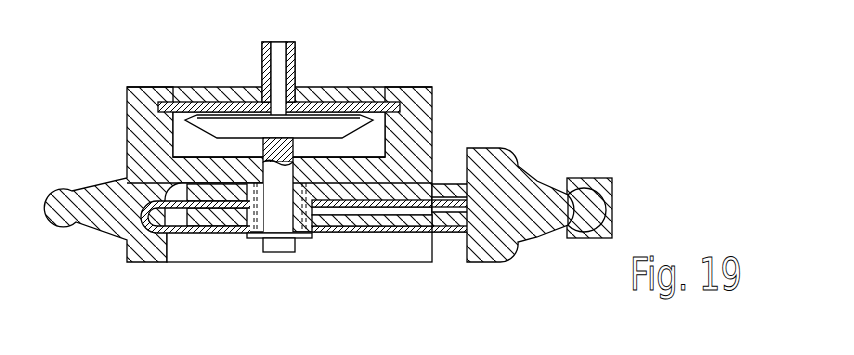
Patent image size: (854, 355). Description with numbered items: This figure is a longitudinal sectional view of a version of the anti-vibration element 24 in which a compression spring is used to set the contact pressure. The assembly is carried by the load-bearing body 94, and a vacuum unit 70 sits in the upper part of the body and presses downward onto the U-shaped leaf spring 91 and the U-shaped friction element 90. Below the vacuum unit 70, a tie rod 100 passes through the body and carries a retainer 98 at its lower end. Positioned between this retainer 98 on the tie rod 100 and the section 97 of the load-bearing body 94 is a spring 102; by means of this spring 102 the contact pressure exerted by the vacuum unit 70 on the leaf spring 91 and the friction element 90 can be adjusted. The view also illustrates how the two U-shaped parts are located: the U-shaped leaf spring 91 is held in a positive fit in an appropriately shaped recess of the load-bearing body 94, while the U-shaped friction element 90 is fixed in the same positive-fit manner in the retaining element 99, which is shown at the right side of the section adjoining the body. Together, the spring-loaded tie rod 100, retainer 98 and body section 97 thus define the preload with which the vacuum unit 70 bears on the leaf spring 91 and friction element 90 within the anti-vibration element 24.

The anti-vibration element 24 is at (551, 73).
The vacuum unit 70 is at (317, 130).
The friction element 90 is at (447, 228).
The leaf spring 91 is at (178, 234).
The load-bearing body 94 is at (145, 96).
The section 97 is at (353, 168).
The retainer 98 is at (260, 238).
The retaining element 99 is at (507, 165).
The tie rod 100 is at (280, 248).
The spring 102 is at (312, 218).